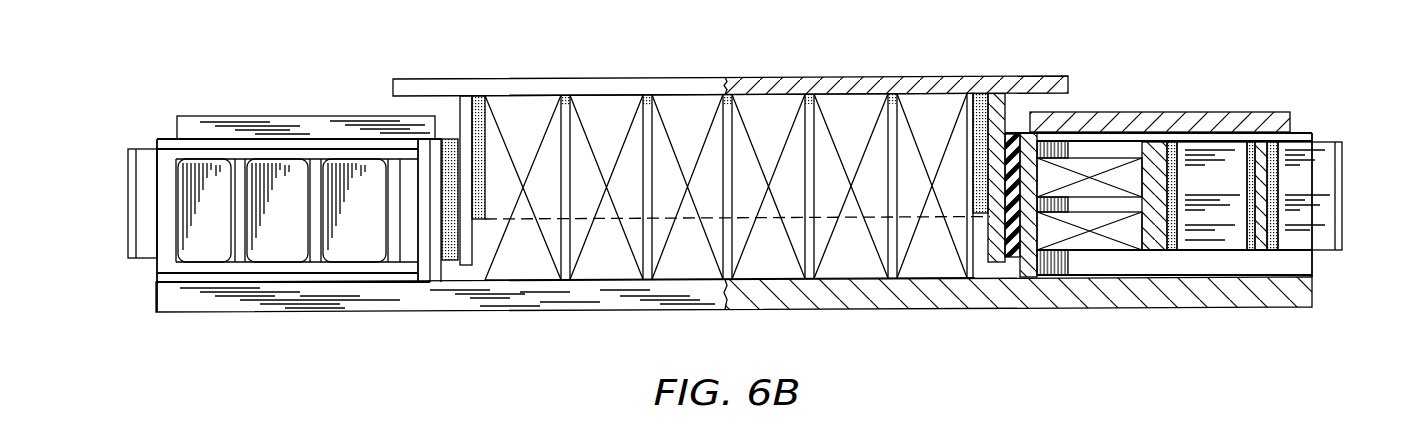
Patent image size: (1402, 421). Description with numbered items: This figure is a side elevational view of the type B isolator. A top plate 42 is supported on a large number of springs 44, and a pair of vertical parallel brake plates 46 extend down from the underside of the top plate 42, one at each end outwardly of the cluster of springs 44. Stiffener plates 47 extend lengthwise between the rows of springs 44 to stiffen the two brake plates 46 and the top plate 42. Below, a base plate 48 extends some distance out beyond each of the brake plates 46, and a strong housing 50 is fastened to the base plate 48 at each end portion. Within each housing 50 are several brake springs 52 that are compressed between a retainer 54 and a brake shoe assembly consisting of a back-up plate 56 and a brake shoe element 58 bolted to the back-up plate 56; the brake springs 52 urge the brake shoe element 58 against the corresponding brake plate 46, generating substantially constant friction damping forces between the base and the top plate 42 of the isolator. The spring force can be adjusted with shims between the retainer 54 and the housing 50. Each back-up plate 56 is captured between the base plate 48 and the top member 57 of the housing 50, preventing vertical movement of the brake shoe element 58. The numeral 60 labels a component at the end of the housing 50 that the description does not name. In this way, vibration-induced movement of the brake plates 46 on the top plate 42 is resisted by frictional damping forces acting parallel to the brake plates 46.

The top plate 42 is at (587, 79).
The springs 44 is at (542, 265).
The brake plates 46 is at (463, 115).
The stiffener plates 47 is at (982, 107).
The base plate 48 is at (788, 298).
The housing 50 is at (231, 114).
The brake springs 52 is at (1115, 190).
The retainer 54 is at (133, 202).
The back-up plate 56 is at (435, 276).
The top member 57 is at (310, 123).
The brake shoe element 58 is at (450, 262).
The cell stack 60 is at (420, 227).